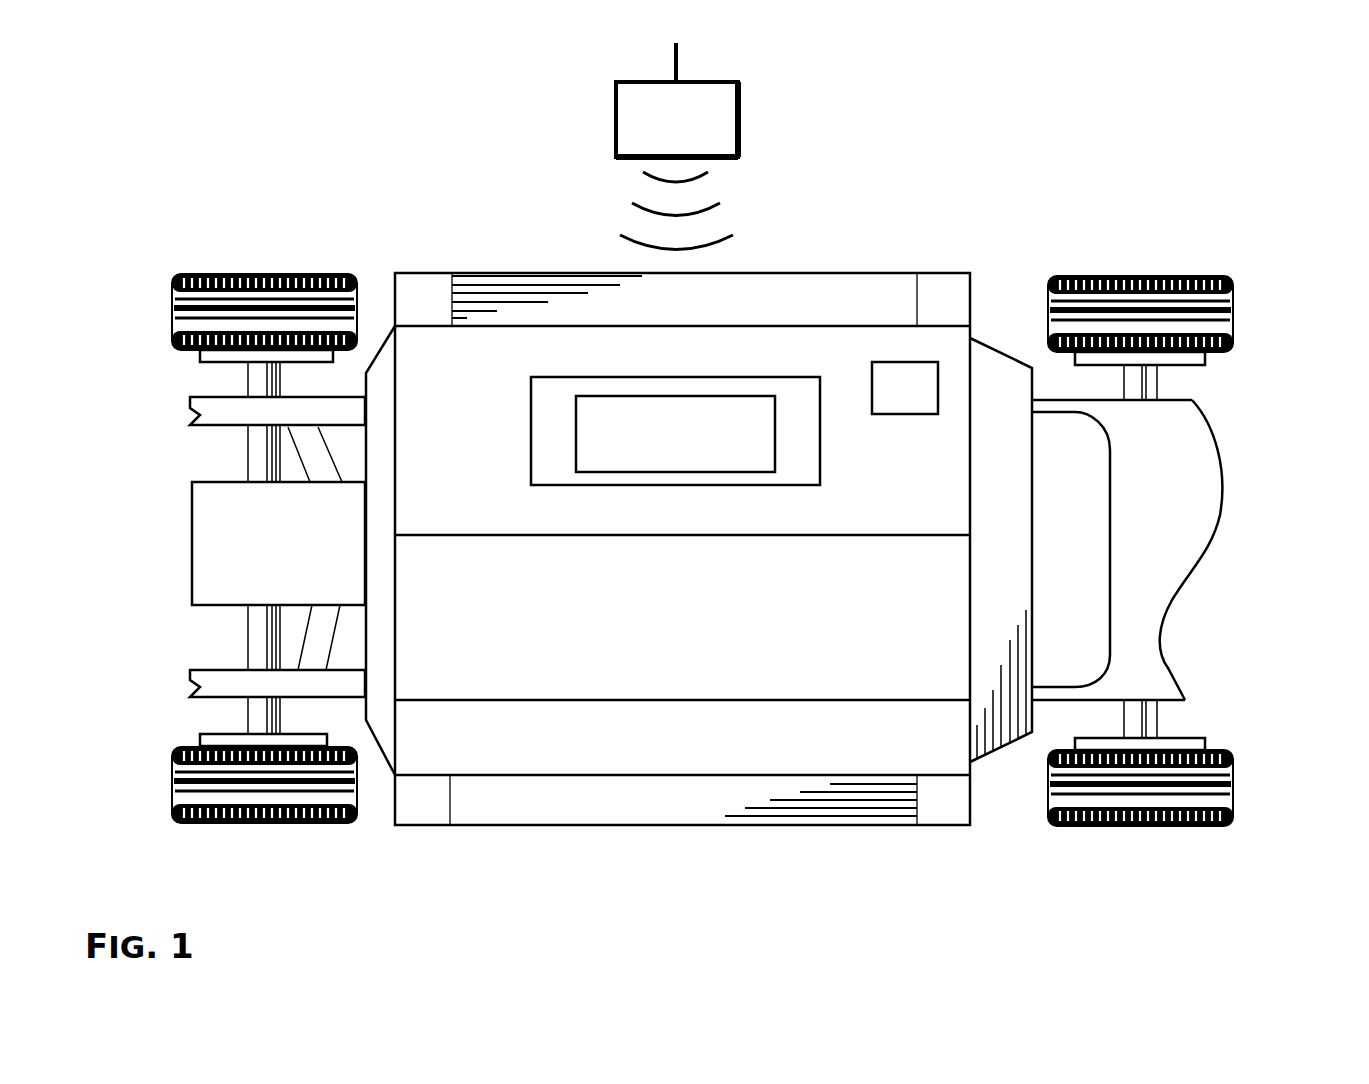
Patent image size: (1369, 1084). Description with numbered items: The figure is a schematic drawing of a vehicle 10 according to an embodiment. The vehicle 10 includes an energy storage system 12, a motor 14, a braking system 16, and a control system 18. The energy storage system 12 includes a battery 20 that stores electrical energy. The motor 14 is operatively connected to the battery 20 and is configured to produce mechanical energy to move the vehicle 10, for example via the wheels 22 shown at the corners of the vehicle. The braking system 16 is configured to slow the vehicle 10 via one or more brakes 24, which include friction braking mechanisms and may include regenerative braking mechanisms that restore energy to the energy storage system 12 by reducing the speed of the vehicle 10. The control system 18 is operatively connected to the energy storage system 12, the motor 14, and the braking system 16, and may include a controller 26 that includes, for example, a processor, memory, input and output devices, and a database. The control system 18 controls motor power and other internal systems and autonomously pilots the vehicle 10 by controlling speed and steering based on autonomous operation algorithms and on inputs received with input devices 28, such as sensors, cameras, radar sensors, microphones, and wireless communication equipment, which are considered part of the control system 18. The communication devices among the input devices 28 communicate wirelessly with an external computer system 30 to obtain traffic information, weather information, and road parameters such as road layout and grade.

The vehicle 10 is at (440, 208).
The energy storage system 12 is at (596, 677).
The motor 14 is at (298, 566).
The braking system 16 is at (1162, 563).
The control system 18 is at (542, 424).
The battery 20 is at (707, 642).
The wheels 22 is at (212, 276).
The brakes 24 is at (200, 352).
The controller 26 is at (702, 453).
The input devices 28 is at (927, 406).
The external computer system 30 is at (698, 136).